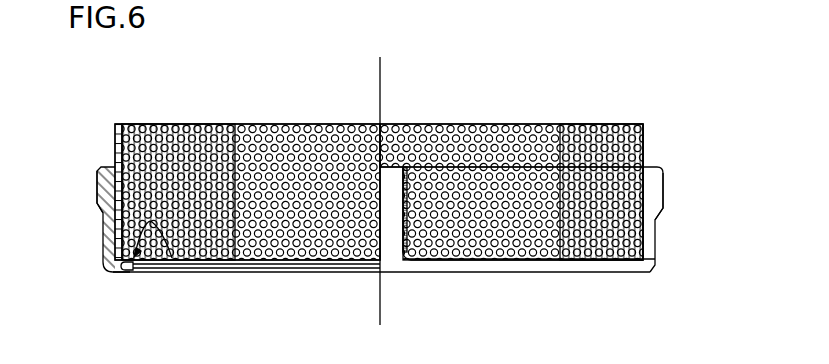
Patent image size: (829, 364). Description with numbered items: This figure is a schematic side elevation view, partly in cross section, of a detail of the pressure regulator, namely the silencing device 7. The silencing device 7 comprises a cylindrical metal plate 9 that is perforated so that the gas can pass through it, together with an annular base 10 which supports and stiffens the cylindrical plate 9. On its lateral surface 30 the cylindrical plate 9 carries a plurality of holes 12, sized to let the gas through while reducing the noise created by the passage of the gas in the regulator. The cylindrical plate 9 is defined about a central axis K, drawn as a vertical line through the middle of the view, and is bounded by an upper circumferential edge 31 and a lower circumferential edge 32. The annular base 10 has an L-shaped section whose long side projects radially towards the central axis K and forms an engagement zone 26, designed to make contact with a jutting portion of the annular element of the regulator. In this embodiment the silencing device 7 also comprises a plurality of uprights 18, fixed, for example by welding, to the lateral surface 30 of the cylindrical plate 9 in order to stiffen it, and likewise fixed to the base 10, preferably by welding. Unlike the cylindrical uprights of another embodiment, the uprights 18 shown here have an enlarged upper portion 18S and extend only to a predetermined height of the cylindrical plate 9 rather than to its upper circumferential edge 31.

The silencing device 7 is at (582, 110).
The cylindrical metal plate 9 is at (112, 135).
The annular base 10 is at (648, 264).
The holes 12 is at (113, 158).
The uprights 18 is at (112, 247).
The enlarged upper portion 18S is at (95, 181).
The engagement zone 26 is at (172, 258).
The lateral surface 30 is at (645, 147).
The upper circumferential edge 31 is at (541, 122).
The lower circumferential edge 32 is at (235, 258).
The central axis K is at (381, 95).